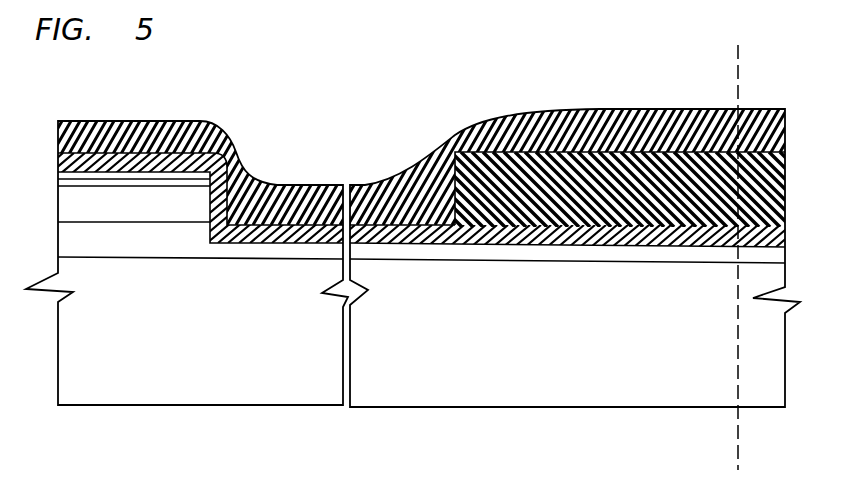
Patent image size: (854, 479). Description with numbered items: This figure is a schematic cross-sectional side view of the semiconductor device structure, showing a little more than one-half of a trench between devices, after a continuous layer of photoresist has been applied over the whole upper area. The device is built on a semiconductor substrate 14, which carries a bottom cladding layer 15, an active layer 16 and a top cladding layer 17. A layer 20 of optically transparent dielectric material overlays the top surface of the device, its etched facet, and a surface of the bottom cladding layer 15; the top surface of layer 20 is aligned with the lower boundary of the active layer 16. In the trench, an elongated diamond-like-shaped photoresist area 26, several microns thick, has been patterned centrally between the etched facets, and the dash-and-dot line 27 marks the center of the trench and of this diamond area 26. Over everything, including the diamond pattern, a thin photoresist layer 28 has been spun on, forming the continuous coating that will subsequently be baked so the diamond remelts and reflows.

The semiconductor substrate 14 is at (58, 356).
The bottom cladding layer 15 is at (58, 246).
The active layer 16 is at (58, 212).
The top cladding layer 17 is at (58, 184).
The dielectric layer 20 is at (58, 158).
The photoresist area 26 is at (785, 192).
The dash-and-dot line 27 is at (742, 66).
The photoresist layer 28 is at (214, 121).